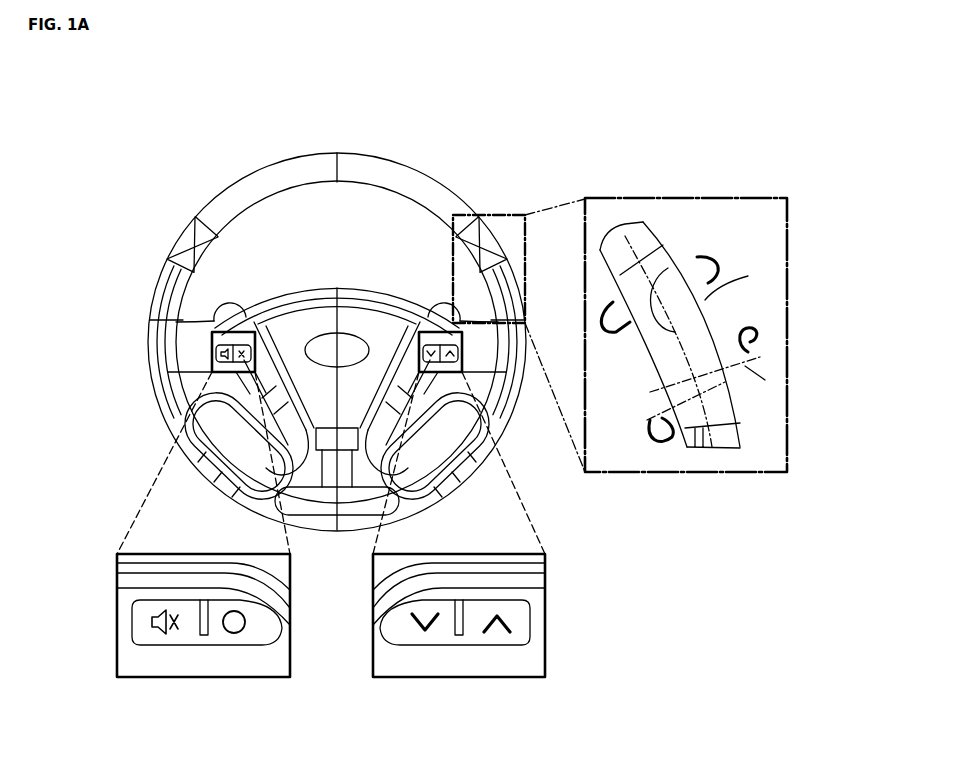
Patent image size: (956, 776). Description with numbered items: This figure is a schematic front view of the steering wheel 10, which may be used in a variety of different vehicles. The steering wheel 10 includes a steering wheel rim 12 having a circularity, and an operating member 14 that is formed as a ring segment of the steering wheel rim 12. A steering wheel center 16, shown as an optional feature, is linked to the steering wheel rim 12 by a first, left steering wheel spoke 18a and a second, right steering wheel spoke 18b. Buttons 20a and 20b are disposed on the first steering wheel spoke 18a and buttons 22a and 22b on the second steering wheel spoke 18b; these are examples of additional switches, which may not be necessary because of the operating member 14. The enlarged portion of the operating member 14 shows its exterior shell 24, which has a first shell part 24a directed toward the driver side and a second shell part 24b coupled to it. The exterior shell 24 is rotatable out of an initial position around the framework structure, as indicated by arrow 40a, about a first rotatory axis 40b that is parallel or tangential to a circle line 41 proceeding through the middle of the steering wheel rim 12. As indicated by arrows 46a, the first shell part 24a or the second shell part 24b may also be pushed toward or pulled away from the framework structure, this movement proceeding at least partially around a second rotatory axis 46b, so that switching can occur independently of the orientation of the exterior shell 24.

The steering wheel 10 is at (452, 148).
The steering wheel rim 12 is at (247, 197).
The operating member 14 is at (507, 255).
The steering wheel center 16 is at (318, 296).
The first steering wheel spoke 18a is at (190, 406).
The second steering wheel spoke 18b is at (492, 400).
The button 20a is at (183, 640).
The button 20b is at (258, 640).
The button 22a is at (440, 640).
The button 22b is at (498, 640).
The exterior shell 24 is at (680, 383).
The first shell part 24a is at (740, 417).
The second shell part 24b is at (672, 240).
The arrow 40a is at (712, 258).
The first rotatory axis 40b is at (712, 303).
The circle line 41 is at (498, 290).
The arrows 46a is at (758, 336).
The second rotatory axis 46b is at (753, 375).